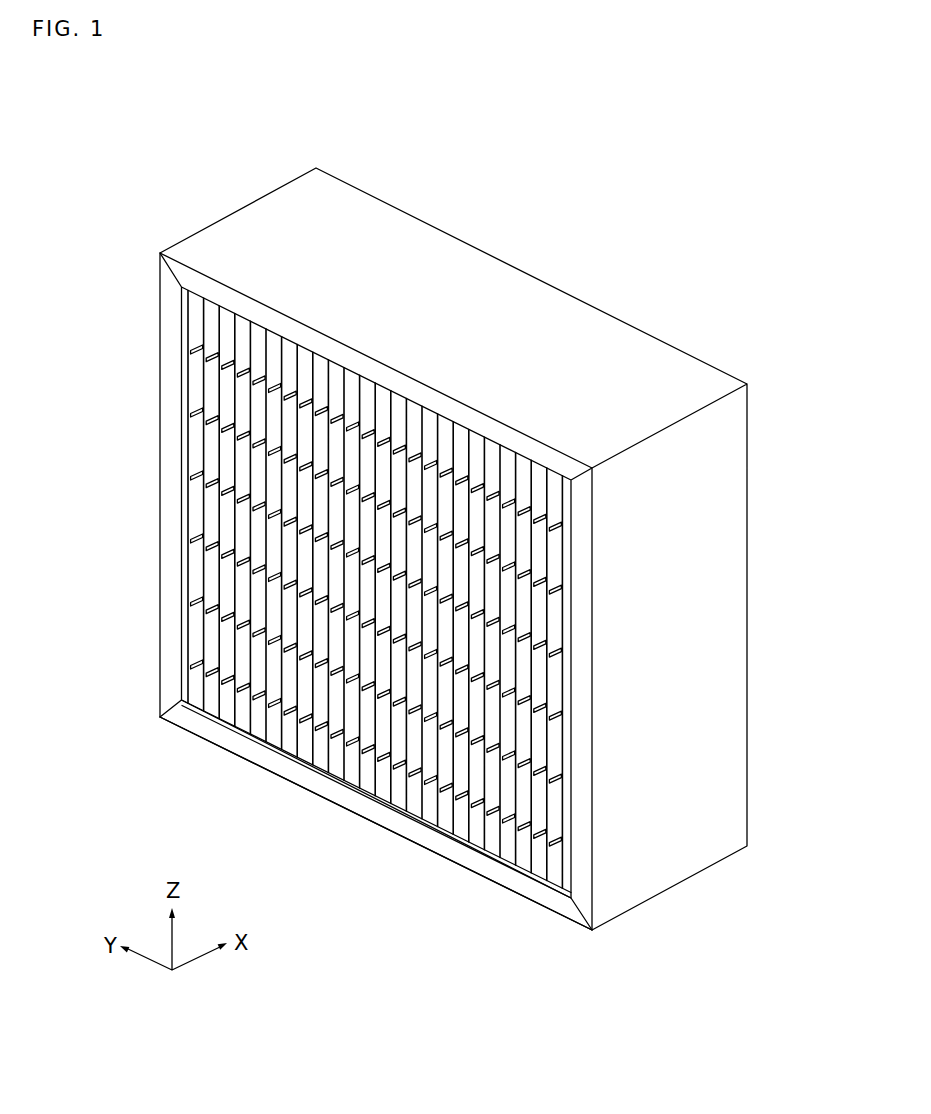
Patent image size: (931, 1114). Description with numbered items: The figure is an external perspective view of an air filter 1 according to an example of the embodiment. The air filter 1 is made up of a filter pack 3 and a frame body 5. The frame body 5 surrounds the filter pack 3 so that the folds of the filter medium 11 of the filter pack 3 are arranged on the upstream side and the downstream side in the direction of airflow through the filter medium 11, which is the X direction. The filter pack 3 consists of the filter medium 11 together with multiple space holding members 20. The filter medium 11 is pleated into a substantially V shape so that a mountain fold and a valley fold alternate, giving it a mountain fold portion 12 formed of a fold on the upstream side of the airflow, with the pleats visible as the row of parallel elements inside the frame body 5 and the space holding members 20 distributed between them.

The air filter 1 is at (606, 239).
The filter pack 3 is at (459, 822).
The frame body 5 is at (735, 648).
The filter medium 11 is at (492, 835).
The mountain fold portion 12 is at (527, 873).
The space holding member 20 is at (445, 780).